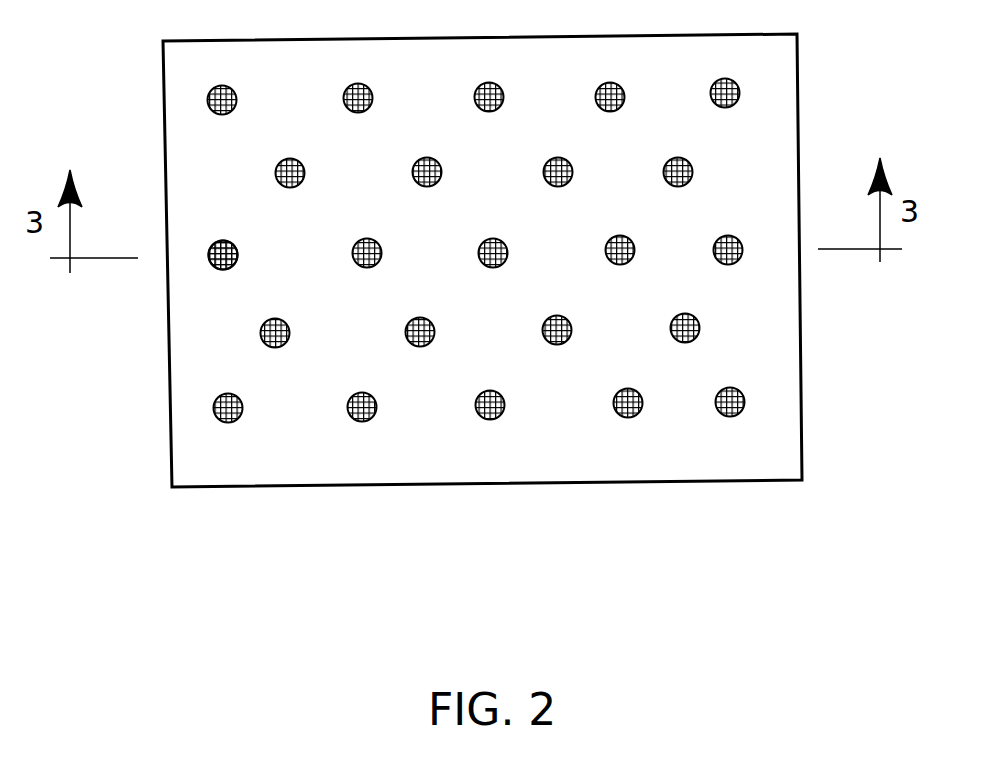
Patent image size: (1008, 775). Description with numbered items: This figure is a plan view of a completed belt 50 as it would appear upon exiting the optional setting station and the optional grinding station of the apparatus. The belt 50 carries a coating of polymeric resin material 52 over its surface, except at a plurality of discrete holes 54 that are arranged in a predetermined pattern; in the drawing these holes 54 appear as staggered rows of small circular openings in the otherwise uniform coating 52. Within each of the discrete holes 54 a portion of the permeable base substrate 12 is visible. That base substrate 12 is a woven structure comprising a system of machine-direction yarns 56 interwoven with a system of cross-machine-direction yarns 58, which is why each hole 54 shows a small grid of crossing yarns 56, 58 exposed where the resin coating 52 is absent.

The completed belt 50 is at (469, 276).
The coating of polymeric resin material 52 is at (775, 346).
The permeable base substrate 12 is at (207, 97).
The discrete holes 54 is at (632, 414).
The machine-direction (MD) yarns 56 is at (212, 268).
The cross-machine-direction (CD) yarns 58 is at (217, 243).